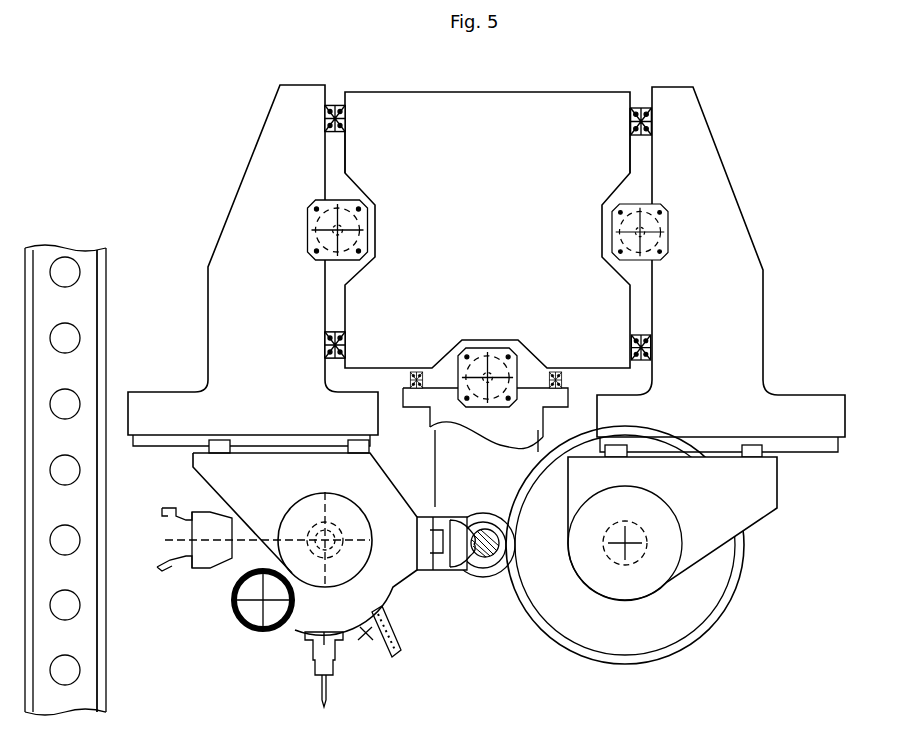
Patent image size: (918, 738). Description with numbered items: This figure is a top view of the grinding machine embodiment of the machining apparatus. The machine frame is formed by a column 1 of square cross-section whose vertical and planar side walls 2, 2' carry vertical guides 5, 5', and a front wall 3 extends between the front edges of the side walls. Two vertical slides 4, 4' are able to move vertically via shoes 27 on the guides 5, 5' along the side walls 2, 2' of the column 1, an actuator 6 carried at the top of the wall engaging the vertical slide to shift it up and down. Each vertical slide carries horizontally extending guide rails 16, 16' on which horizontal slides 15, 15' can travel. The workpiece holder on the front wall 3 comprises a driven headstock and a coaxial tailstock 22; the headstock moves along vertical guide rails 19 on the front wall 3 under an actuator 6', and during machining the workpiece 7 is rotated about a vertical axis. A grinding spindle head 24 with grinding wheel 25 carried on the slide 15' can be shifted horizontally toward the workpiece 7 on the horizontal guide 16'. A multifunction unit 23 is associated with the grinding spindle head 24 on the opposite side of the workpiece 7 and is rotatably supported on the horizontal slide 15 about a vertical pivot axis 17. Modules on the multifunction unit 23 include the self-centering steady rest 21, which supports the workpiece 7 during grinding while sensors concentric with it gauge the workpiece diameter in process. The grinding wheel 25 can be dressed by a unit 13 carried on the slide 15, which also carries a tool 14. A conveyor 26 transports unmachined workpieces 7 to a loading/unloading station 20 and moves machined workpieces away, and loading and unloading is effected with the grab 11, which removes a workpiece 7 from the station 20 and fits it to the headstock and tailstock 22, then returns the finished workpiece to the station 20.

The column 1 is at (568, 102).
The side wall 2 is at (277, 139).
The side wall 2' is at (702, 140).
The front wall 3 is at (612, 375).
The vertical slide 4 is at (253, 260).
The vertical slide 4' is at (721, 262).
The vertical guide rail 5 is at (359, 232).
The vertical guide rail 5' is at (615, 234).
The actuator 6 is at (488, 217).
The actuator 6' is at (487, 349).
The workpiece 7 is at (66, 340).
The grab 11 is at (185, 563).
The dressing unit 13 is at (250, 612).
The tool 14 is at (328, 698).
The horizontal slide 15 is at (291, 544).
The horizontal slide 15' is at (698, 528).
The horizontal guide rail 16 is at (244, 457).
The horizontal guide rail 16' is at (736, 468).
The pivot axis 17 is at (318, 540).
The vertical guide rail 19 is at (416, 372).
The loading/unloading station 20 is at (76, 568).
The self-centering steady rest 21 is at (443, 562).
The tailstock 22 is at (498, 585).
The multifunction unit 23 is at (398, 600).
The grinding spindle head 24 is at (668, 616).
The grinding wheel 25 is at (598, 654).
The conveyor 26 is at (100, 268).
The shoe 27 is at (325, 118).